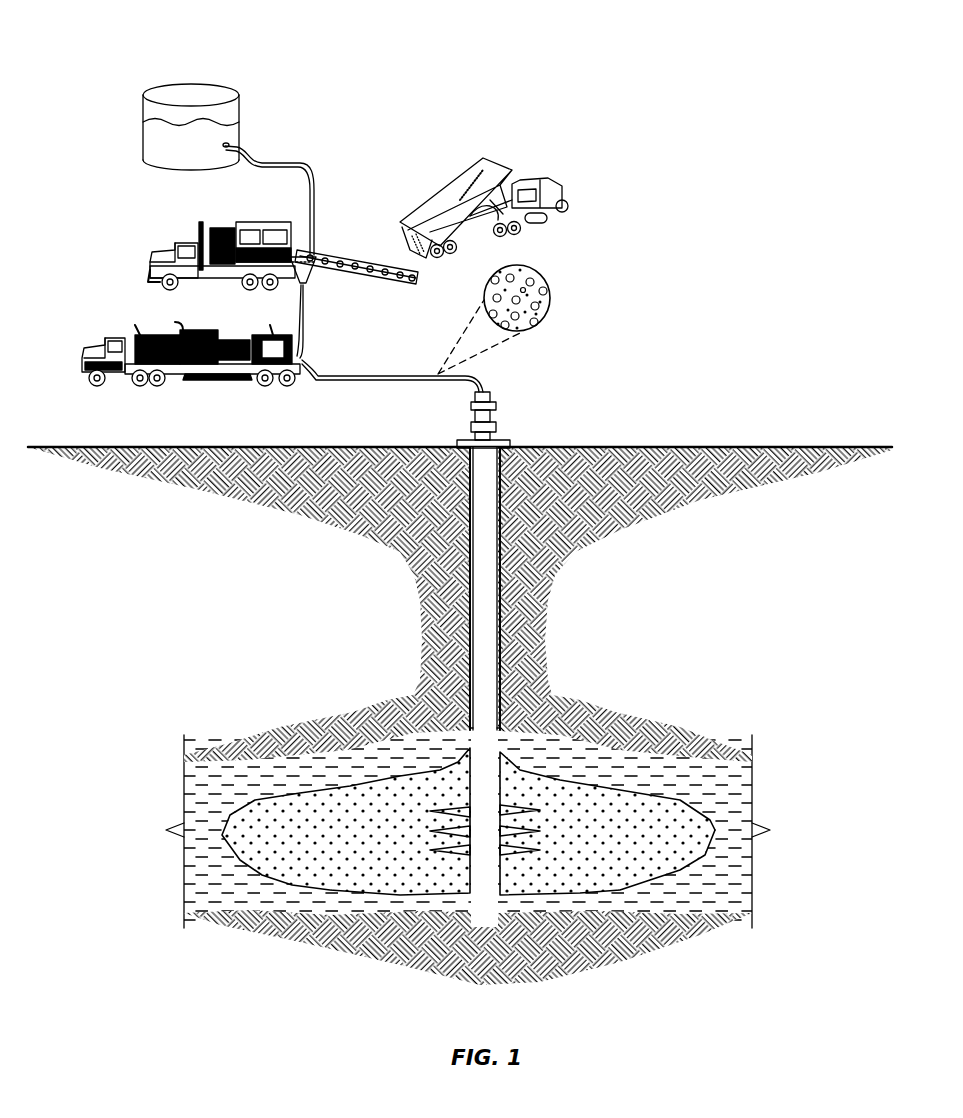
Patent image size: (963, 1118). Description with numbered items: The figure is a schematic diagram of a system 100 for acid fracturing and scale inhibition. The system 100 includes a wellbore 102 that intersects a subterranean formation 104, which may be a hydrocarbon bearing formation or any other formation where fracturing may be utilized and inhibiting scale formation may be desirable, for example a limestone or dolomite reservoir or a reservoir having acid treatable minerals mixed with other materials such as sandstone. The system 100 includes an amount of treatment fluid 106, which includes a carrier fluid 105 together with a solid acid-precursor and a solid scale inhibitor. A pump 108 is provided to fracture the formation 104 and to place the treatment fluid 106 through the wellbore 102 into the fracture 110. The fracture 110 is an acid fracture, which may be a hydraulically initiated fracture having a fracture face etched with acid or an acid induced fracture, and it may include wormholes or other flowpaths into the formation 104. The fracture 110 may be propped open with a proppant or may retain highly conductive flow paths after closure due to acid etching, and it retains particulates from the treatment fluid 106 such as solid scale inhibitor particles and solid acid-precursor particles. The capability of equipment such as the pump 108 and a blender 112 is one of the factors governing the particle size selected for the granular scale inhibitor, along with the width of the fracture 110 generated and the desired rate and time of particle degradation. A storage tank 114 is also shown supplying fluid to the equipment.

The system 100 is at (121, 40).
The wellbore 102 is at (497, 628).
The subterranean formation 104 is at (752, 785).
The carrier fluid 105 is at (500, 308).
The treatment fluid 106 is at (548, 318).
The pump 108 is at (90, 352).
The fracture 110 is at (353, 843).
The blender 112 is at (163, 256).
The fluid storage tank 114 is at (143, 124).